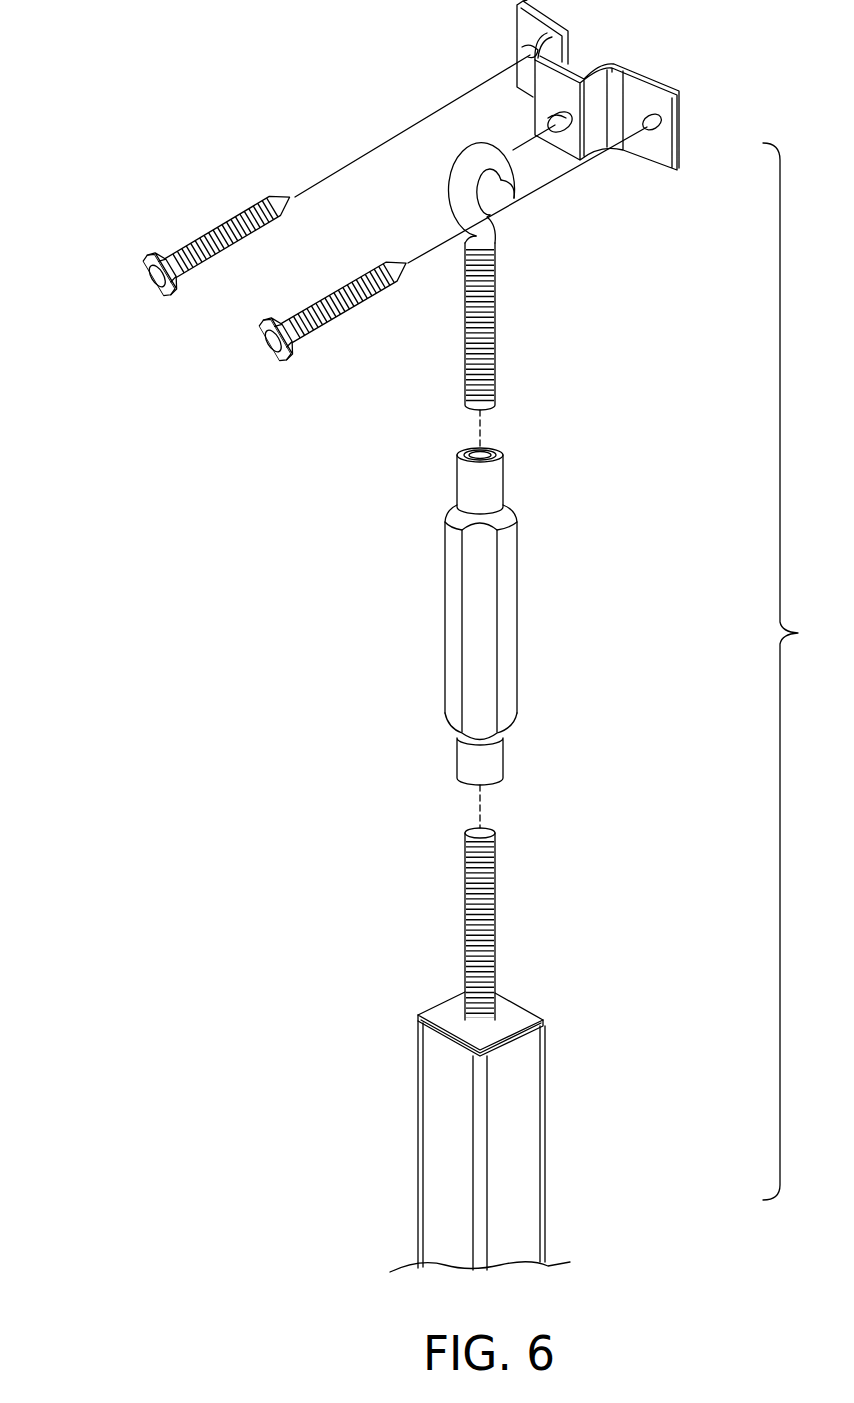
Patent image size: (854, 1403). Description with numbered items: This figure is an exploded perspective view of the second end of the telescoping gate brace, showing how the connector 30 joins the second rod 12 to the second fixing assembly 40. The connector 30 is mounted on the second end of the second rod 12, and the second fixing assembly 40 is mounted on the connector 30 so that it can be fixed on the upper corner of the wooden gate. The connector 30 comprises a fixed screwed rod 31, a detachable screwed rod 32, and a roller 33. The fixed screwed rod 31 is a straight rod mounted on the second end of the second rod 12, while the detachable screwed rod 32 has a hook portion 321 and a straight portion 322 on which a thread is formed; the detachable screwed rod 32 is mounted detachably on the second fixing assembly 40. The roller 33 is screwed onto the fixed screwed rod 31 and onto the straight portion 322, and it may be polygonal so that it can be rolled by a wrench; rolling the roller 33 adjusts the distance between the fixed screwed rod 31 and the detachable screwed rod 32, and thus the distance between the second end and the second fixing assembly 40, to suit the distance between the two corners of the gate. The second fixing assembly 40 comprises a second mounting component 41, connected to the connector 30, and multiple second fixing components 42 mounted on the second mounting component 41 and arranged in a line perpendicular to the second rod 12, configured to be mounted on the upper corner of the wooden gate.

The second rod 12 is at (428, 1110).
The connector 30 is at (504, 734).
The fixed screwed rod 31 is at (497, 906).
The detachable screwed rod 32 is at (484, 276).
The roller 33 is at (455, 623).
The second fixing assembly 40 is at (631, 85).
The second mounting component 41 is at (570, 72).
The second fixing components 42 is at (150, 253).
The hook portion 321 is at (465, 355).
The straight portion 322 is at (457, 185).